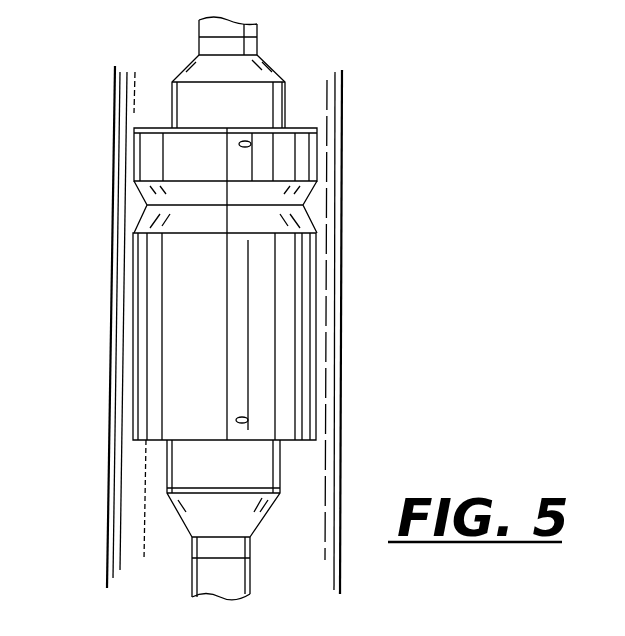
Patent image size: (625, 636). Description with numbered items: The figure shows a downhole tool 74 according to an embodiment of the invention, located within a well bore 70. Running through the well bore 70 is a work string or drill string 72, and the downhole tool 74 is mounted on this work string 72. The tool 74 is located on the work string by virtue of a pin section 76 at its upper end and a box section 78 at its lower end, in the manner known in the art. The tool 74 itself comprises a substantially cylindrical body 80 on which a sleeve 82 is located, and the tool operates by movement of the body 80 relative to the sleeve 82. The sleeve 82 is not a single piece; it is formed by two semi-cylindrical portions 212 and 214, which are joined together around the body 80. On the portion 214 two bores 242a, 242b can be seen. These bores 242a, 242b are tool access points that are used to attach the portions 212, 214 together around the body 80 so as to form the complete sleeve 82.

The well bore 70 is at (342, 168).
The work string 72 is at (200, 578).
The downhole tool 74 is at (141, 487).
The pin section 76 is at (248, 47).
The box section 78 is at (205, 545).
The cylindrical body 80 is at (273, 102).
The sleeve 82 is at (300, 328).
The semi-cylindrical portion 212 is at (152, 290).
The semi-cylindrical portion 214 is at (303, 273).
The bore 242a is at (252, 144).
The bore 242b is at (249, 420).